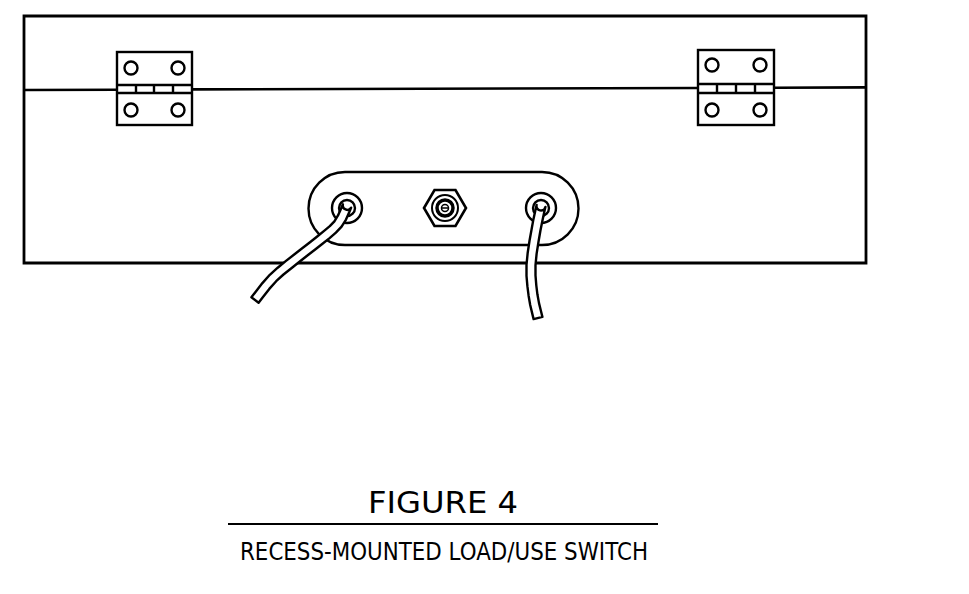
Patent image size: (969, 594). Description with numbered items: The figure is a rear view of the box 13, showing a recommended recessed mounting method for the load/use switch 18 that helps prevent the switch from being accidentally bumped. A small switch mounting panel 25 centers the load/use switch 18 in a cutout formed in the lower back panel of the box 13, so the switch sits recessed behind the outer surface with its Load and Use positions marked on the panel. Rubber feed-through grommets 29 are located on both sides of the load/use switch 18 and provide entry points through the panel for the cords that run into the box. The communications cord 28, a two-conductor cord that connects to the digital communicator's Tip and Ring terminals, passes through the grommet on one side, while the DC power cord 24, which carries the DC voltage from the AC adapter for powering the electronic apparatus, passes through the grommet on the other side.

The box 13 is at (747, 255).
The load/use switch 18 is at (452, 197).
The DC power cord 24 is at (530, 305).
The switch mounting panel 25 is at (490, 173).
The communications cord 28 is at (270, 287).
The rubber feed-through grommets 29 is at (342, 192).